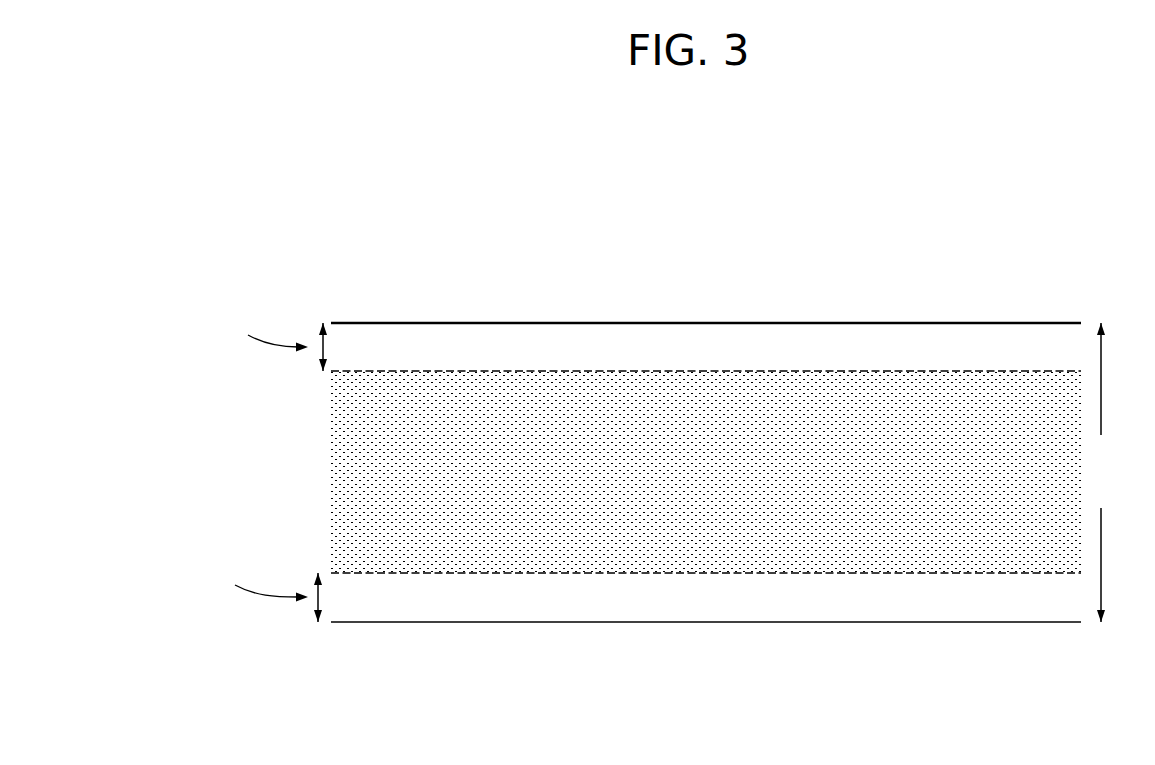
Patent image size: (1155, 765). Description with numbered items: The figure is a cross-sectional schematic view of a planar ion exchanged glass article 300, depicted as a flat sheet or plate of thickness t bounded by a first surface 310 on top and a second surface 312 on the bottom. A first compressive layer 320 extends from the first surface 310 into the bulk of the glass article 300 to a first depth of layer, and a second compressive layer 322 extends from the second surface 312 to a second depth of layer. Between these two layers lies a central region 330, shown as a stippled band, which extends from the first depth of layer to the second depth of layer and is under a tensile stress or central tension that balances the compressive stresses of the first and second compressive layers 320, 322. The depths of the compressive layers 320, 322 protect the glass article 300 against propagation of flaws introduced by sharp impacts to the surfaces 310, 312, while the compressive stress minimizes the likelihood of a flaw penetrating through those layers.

The glass article 300 is at (713, 192).
The first surface 310 is at (833, 314).
The second surface 312 is at (820, 633).
The first compressive layer 320 is at (467, 336).
The second compressive layer 322 is at (482, 610).
The central region 330 is at (345, 472).